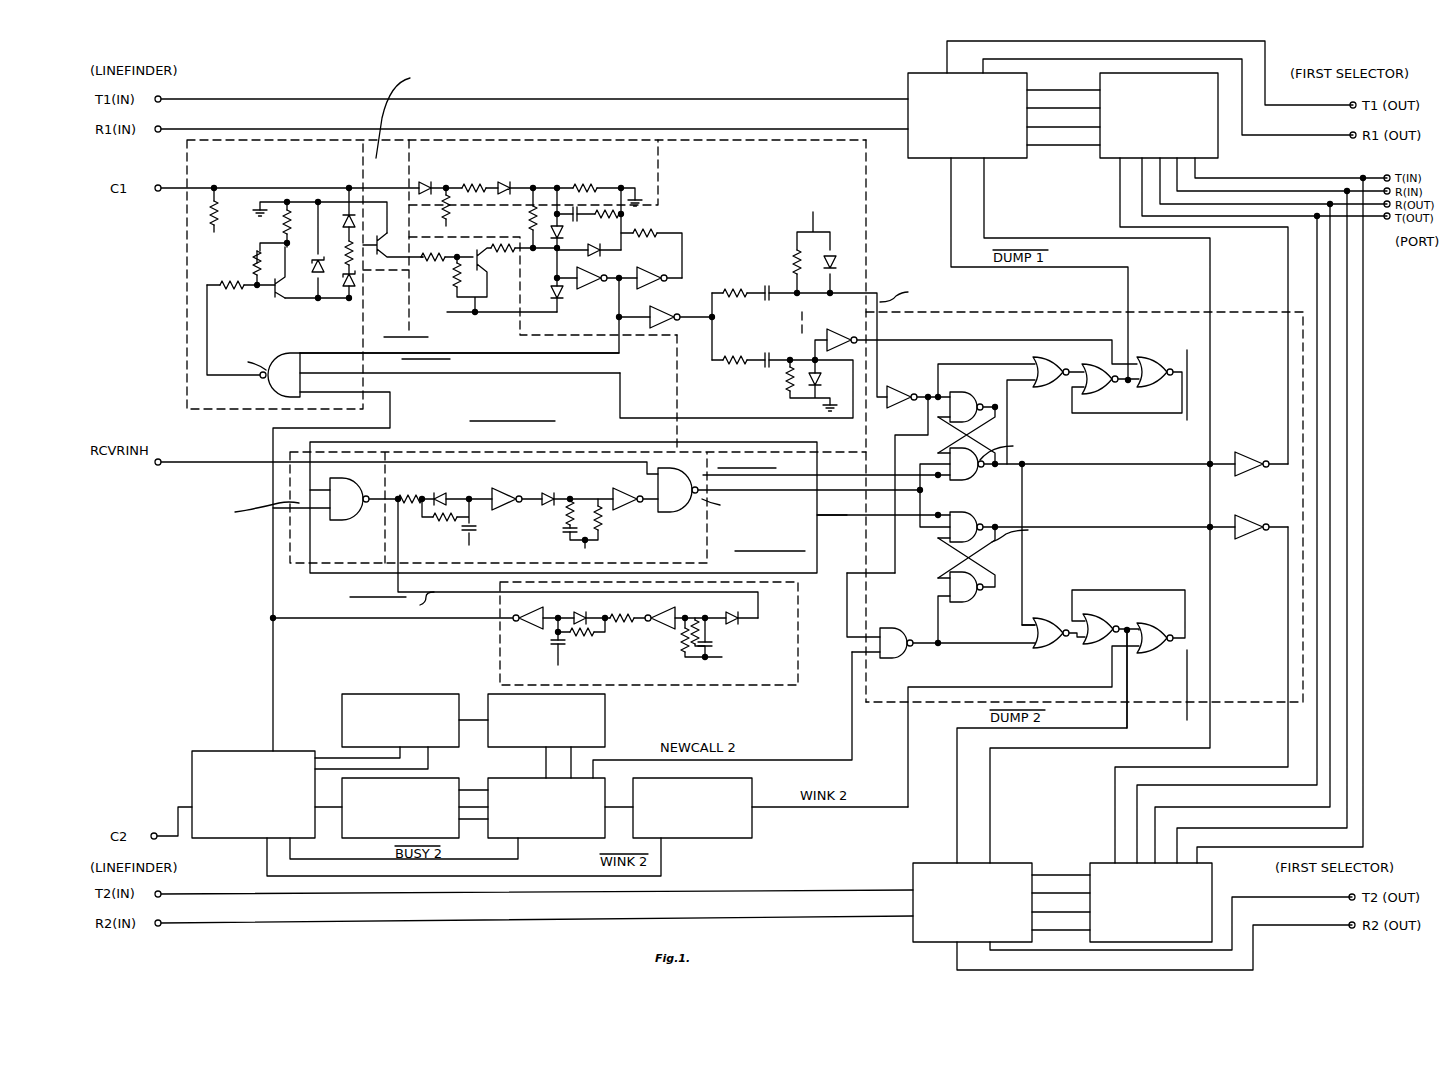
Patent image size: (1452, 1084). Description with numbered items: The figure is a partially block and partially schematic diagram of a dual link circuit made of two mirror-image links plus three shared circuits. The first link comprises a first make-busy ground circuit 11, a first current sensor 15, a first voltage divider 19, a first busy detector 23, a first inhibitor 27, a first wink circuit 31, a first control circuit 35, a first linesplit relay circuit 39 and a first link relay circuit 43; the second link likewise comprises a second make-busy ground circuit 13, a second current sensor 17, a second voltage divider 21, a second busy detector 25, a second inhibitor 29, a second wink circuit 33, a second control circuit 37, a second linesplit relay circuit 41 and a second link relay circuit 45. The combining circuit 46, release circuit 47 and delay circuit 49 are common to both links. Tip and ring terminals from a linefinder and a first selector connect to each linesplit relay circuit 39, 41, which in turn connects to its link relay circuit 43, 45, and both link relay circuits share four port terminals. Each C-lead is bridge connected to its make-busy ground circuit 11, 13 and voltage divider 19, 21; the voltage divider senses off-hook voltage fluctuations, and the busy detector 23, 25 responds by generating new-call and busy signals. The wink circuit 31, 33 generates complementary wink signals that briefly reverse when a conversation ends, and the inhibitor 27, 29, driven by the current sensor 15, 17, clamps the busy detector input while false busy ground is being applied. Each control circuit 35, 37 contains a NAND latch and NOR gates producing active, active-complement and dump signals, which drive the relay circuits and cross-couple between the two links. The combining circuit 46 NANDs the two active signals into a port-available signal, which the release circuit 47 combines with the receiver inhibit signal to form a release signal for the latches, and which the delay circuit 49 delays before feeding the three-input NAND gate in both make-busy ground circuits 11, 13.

The first make-busy ground circuit 11 is at (186, 308).
The second make-busy ground circuit 13 is at (222, 750).
The first current sensor 15 is at (410, 140).
The second current sensor 17 is at (440, 681).
The first voltage divider 19 is at (640, 143).
The second voltage divider 21 is at (445, 777).
The first busy detector 23 is at (850, 160).
The second busy detector 25 is at (568, 838).
The first inhibitor 27 is at (500, 335).
The second inhibitor 29 is at (605, 722).
The first wink circuit 31 is at (868, 350).
The second wink circuit 33 is at (752, 782).
The first control circuit 35 is at (1035, 312).
The second control circuit 37 is at (1240, 690).
The first linesplit relay circuit 39 is at (1012, 160).
The second linesplit relay circuit 41 is at (1008, 866).
The first link relay circuit 43 is at (1216, 153).
The second link relay circuit 45 is at (1098, 865).
The combining circuit 46 is at (297, 579).
The release circuit 47 is at (707, 540).
The delay circuit 49 is at (790, 685).